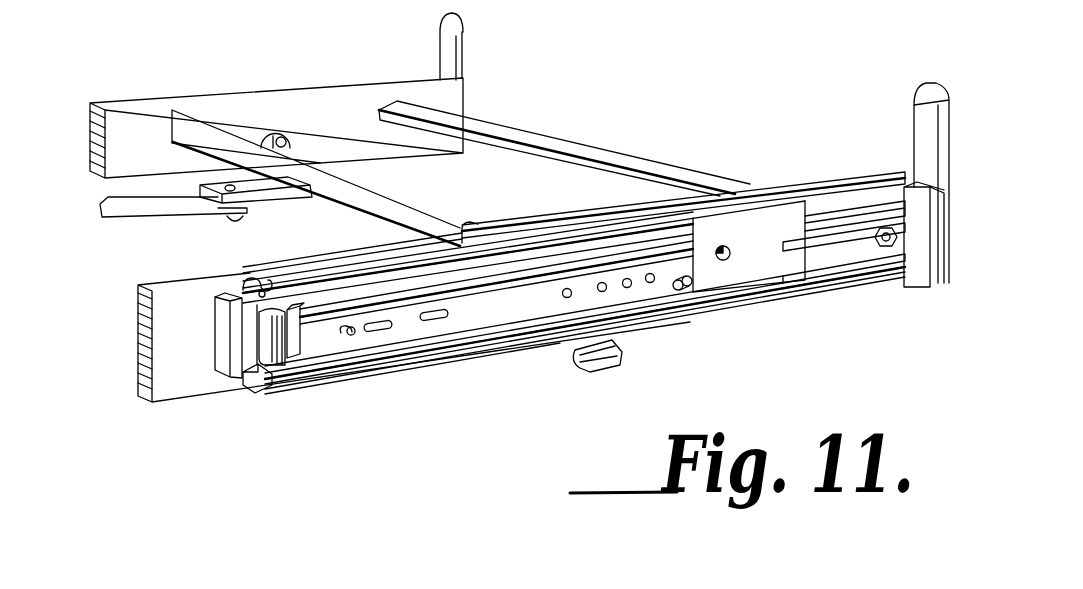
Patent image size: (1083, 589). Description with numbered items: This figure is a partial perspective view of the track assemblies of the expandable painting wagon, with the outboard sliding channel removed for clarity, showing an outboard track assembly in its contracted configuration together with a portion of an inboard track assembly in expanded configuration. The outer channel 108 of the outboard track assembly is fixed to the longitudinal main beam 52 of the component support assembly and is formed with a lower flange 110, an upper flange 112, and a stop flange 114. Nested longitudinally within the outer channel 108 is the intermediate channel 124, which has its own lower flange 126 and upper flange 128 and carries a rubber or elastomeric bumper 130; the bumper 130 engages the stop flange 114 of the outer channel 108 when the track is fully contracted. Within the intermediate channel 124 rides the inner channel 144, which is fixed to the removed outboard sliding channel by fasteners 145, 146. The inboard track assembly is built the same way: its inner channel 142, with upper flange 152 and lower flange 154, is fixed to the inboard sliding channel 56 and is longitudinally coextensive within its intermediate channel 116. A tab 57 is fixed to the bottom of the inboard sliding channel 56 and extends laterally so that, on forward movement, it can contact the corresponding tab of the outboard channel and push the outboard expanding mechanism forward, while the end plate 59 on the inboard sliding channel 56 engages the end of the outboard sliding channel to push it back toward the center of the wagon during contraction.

The longitudinal main beam 52 is at (202, 282).
The inboard sliding channel 56 is at (840, 178).
The tab 57 is at (600, 370).
The end plate 59 is at (928, 287).
The outer channel 108 is at (260, 393).
The lower flange 110 is at (293, 393).
The upper flange 112 is at (268, 278).
The stop flange 114 is at (225, 375).
The intermediate channel 116 is at (752, 282).
The intermediate channel 124 is at (330, 373).
The lower flange 126 is at (472, 355).
The upper flange 128 is at (327, 292).
The bumper 130 is at (270, 337).
The inner channel 142 is at (843, 268).
The inner channel 144 is at (510, 323).
The fastener 145 is at (357, 335).
The fastener 146 is at (693, 289).
The upper flange 152 is at (860, 210).
The lower flange 154 is at (881, 250).